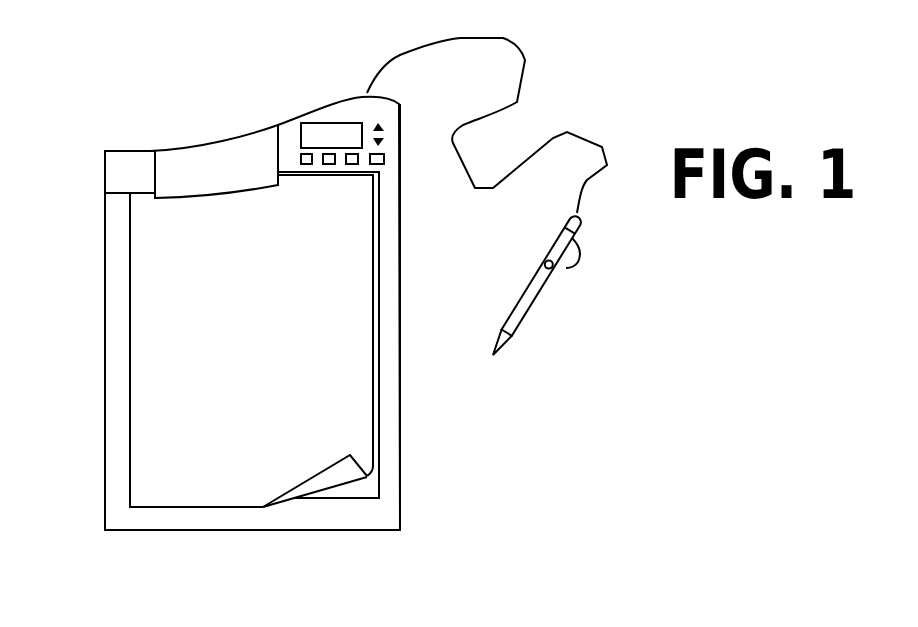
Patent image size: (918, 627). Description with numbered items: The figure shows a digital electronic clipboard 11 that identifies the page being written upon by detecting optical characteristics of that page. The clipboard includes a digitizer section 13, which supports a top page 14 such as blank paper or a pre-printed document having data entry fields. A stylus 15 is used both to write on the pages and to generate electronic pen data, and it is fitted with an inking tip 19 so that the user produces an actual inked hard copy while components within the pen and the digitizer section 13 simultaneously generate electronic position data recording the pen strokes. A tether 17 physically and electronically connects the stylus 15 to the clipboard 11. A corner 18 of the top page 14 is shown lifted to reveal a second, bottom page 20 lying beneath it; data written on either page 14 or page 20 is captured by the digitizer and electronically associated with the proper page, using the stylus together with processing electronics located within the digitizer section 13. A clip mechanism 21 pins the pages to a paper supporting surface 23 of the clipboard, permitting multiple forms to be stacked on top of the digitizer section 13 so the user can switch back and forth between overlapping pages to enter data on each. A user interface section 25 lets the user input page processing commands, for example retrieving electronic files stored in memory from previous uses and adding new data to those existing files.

The digital electronic clipboard 11 is at (100, 396).
The digitizer section 13 is at (401, 365).
The top page 14 is at (348, 413).
The stylus 15 is at (537, 302).
The tether 17 is at (553, 138).
The corner 18 is at (347, 468).
The inking tip 19 is at (505, 342).
The bottom page 20 is at (379, 498).
The clip mechanism 21 is at (212, 184).
The paper supporting surface 23 is at (240, 515).
The user interface section 25 is at (328, 112).